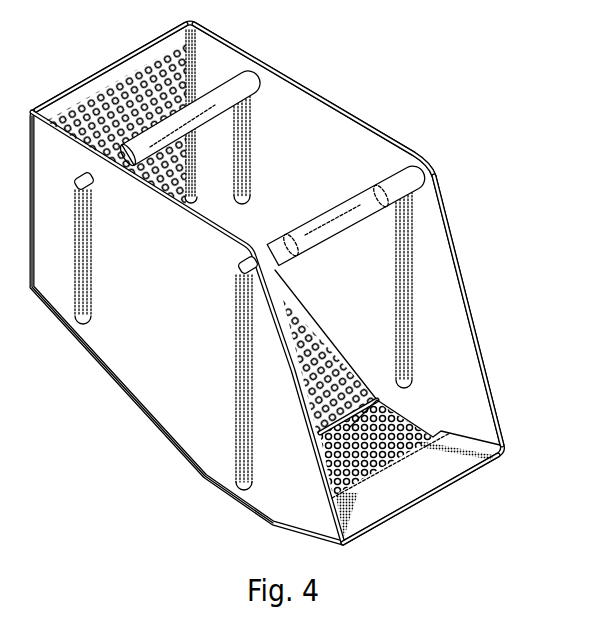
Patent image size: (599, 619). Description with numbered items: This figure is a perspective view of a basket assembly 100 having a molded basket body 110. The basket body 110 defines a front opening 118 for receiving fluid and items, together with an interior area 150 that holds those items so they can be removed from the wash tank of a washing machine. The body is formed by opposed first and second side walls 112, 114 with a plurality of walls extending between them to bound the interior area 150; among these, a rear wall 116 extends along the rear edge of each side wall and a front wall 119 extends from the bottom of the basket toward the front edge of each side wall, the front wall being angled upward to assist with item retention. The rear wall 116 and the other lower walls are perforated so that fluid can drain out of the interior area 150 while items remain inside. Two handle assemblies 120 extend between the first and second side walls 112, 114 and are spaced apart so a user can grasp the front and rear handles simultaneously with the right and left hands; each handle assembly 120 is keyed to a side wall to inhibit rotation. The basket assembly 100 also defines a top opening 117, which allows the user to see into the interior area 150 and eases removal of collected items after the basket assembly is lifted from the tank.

The basket assembly 100 is at (450, 82).
The basket body 110 is at (470, 262).
The first side wall 112 is at (161, 312).
The second side wall 114 is at (313, 175).
The rear wall 116 is at (112, 68).
The top opening 117 is at (304, 102).
The front opening 118 is at (454, 386).
The front wall 119 is at (403, 493).
The handle assembly 120 is at (232, 84).
The interior area 150 is at (376, 304).